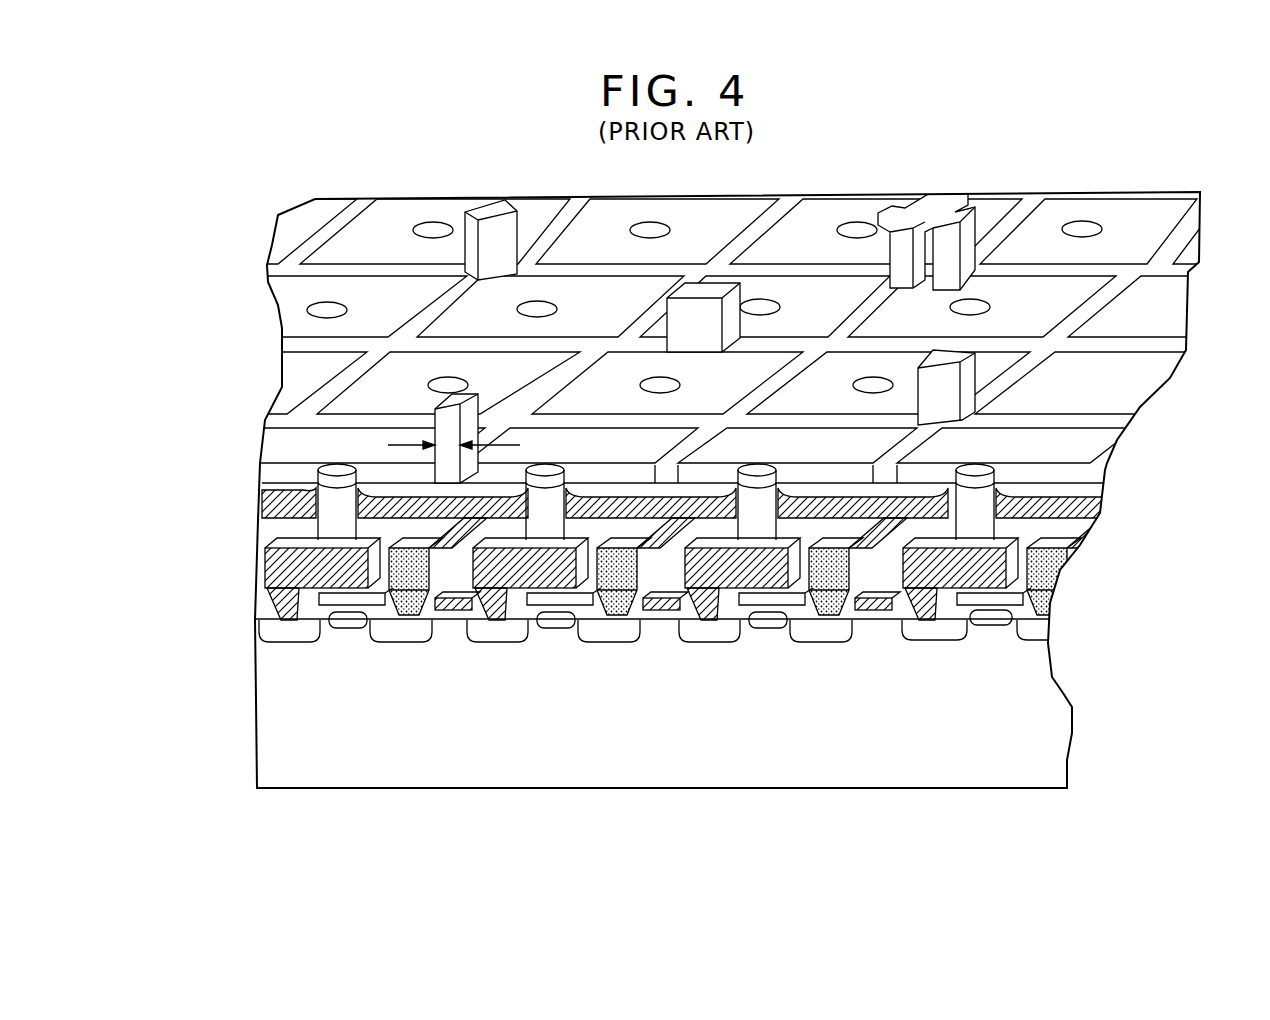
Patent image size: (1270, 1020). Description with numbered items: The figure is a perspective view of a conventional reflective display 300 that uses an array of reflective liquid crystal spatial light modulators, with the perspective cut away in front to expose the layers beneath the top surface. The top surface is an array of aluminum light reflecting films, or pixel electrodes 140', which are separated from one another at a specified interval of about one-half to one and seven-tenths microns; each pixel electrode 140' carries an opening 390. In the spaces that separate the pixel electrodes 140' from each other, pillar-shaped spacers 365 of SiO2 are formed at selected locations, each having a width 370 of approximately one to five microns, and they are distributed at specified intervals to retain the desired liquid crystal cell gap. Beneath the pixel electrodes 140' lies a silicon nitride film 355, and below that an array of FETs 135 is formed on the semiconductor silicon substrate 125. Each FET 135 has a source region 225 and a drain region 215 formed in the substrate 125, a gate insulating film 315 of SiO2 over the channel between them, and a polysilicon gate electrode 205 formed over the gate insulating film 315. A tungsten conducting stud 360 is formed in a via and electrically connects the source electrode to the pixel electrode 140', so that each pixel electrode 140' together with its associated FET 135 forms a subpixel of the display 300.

The reflective display 300 is at (1128, 618).
The light reflecting film 140' is at (1123, 207).
The via hole 390 is at (1083, 228).
The pillar-shaped spacer 365 is at (445, 420).
The width 370 is at (390, 445).
The FET 135 is at (435, 640).
The gate insulating film 315 is at (507, 630).
The silicon nitride film 355 is at (555, 606).
The polysilicon gate electrode 205 is at (662, 612).
The substrate 125 is at (678, 768).
The drain region 215 is at (838, 630).
The conducting stud 360 is at (852, 633).
The source region 225 is at (933, 628).